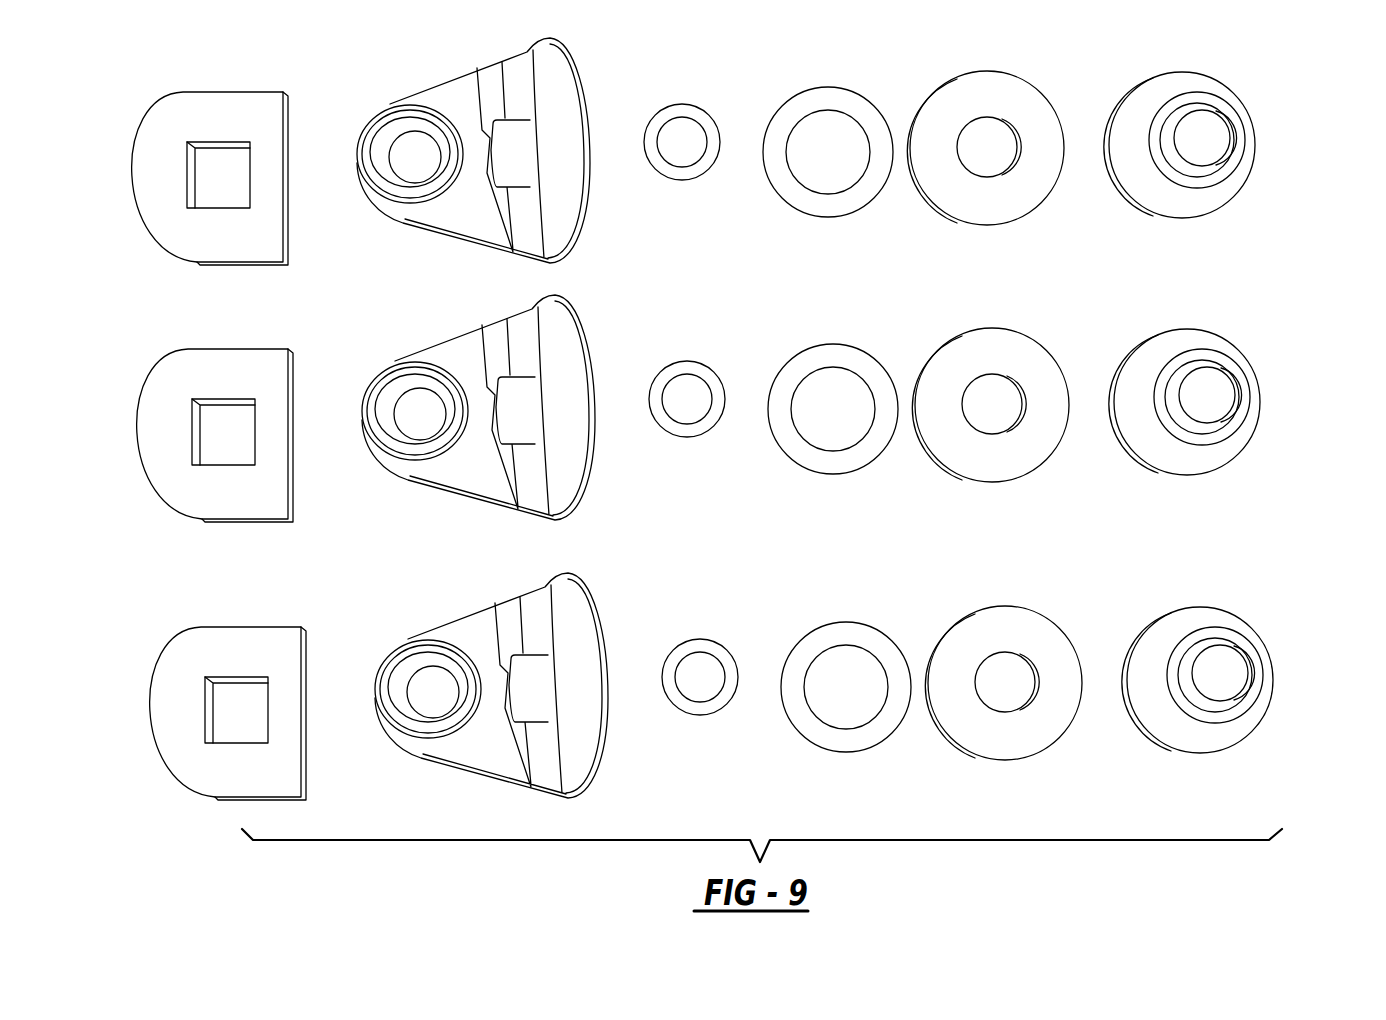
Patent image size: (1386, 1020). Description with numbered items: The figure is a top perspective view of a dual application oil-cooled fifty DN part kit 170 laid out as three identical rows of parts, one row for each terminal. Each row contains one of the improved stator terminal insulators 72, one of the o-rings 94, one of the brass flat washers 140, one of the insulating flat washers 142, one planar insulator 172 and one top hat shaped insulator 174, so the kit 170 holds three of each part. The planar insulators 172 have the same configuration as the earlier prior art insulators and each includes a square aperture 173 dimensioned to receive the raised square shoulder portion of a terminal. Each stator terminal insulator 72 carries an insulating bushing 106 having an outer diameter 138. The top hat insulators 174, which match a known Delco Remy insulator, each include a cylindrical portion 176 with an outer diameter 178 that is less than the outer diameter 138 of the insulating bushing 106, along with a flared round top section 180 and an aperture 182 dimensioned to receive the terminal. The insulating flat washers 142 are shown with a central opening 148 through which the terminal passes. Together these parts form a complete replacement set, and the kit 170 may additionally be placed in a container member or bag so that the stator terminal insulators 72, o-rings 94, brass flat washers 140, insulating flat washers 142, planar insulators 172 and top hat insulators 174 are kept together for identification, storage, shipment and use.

The stator terminal insulator 72 is at (455, 88).
The o-ring 94 is at (682, 108).
The insulating bushing 106 is at (435, 192).
The outer diameter 138 is at (397, 105).
The brass flat washer 140 is at (830, 95).
The insulating flat washer 142 is at (973, 85).
The disc aperture 148 is at (992, 135).
The dual application oil-cooled 50 DN part kit 170 is at (1323, 552).
The planar insulator 172 is at (223, 102).
The square aperture 173 is at (215, 188).
The top hat shaped insulator 174 is at (1182, 73).
The cylindrical portion 176 is at (1163, 163).
The outer diameter 178 is at (1163, 112).
The flared round top section 180 is at (1195, 88).
The aperture 182 is at (1192, 140).